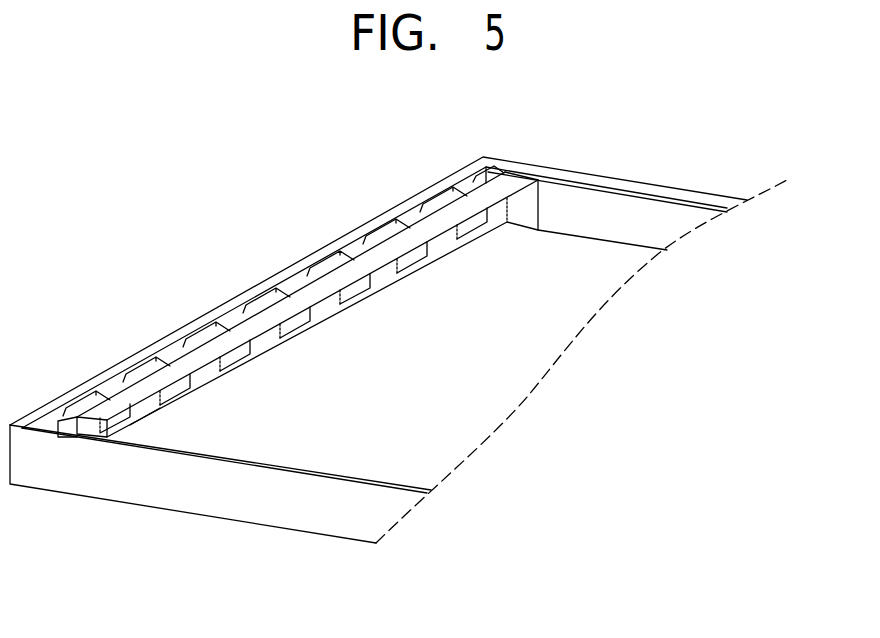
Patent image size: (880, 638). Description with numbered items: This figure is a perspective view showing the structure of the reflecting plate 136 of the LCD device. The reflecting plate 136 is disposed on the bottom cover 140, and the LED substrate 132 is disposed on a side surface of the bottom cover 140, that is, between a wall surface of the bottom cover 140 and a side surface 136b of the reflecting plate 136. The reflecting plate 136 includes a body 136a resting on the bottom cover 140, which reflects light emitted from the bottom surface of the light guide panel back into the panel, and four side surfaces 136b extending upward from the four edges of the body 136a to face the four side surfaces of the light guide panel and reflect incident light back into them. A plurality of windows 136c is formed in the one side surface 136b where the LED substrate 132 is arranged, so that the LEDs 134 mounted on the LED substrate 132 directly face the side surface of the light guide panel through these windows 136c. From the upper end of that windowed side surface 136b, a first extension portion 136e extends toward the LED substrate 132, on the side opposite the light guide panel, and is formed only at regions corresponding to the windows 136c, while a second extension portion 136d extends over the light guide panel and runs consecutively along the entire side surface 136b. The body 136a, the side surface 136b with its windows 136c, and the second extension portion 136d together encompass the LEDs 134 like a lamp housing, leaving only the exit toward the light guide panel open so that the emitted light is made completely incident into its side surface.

The LED substrate 132 is at (62, 438).
The LEDs 134 is at (180, 397).
The reflecting plate 136 is at (478, 383).
The body 136a is at (578, 270).
The side surfaces 136b is at (147, 413).
The windows 136c is at (233, 363).
The second extension portion 136d is at (308, 293).
The first extension portion 136e is at (207, 337).
The bottom cover 140 is at (307, 512).